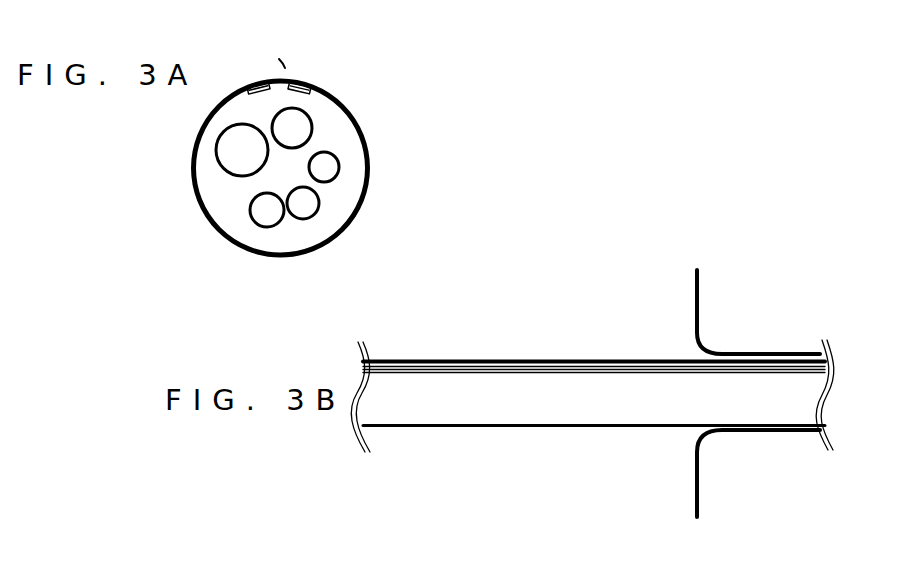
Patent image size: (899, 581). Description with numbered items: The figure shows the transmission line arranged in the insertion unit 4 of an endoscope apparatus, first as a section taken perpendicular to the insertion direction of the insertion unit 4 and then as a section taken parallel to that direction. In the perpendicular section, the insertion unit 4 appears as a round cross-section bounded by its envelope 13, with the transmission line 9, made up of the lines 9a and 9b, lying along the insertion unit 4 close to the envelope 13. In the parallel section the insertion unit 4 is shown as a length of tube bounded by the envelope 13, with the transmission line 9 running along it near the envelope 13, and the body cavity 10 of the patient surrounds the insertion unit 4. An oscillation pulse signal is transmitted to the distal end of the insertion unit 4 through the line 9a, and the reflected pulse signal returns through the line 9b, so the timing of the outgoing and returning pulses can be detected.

In FIG. 3B, the insertion unit 4 is at (592, 368).
In FIG. 3A, the transmission line 9 is at (264, 55).
In FIG. 3B, the transmission line 9 is at (474, 367).
In FIG. 3A, the transmission line 9a is at (262, 70).
In FIG. 3A, the transmission line 9b is at (310, 70).
In FIG. 3B, the body cavity 10 is at (731, 278).
In FIG. 3A, the envelope 13 is at (231, 241).
In FIG. 3B, the envelope 13 is at (399, 361).